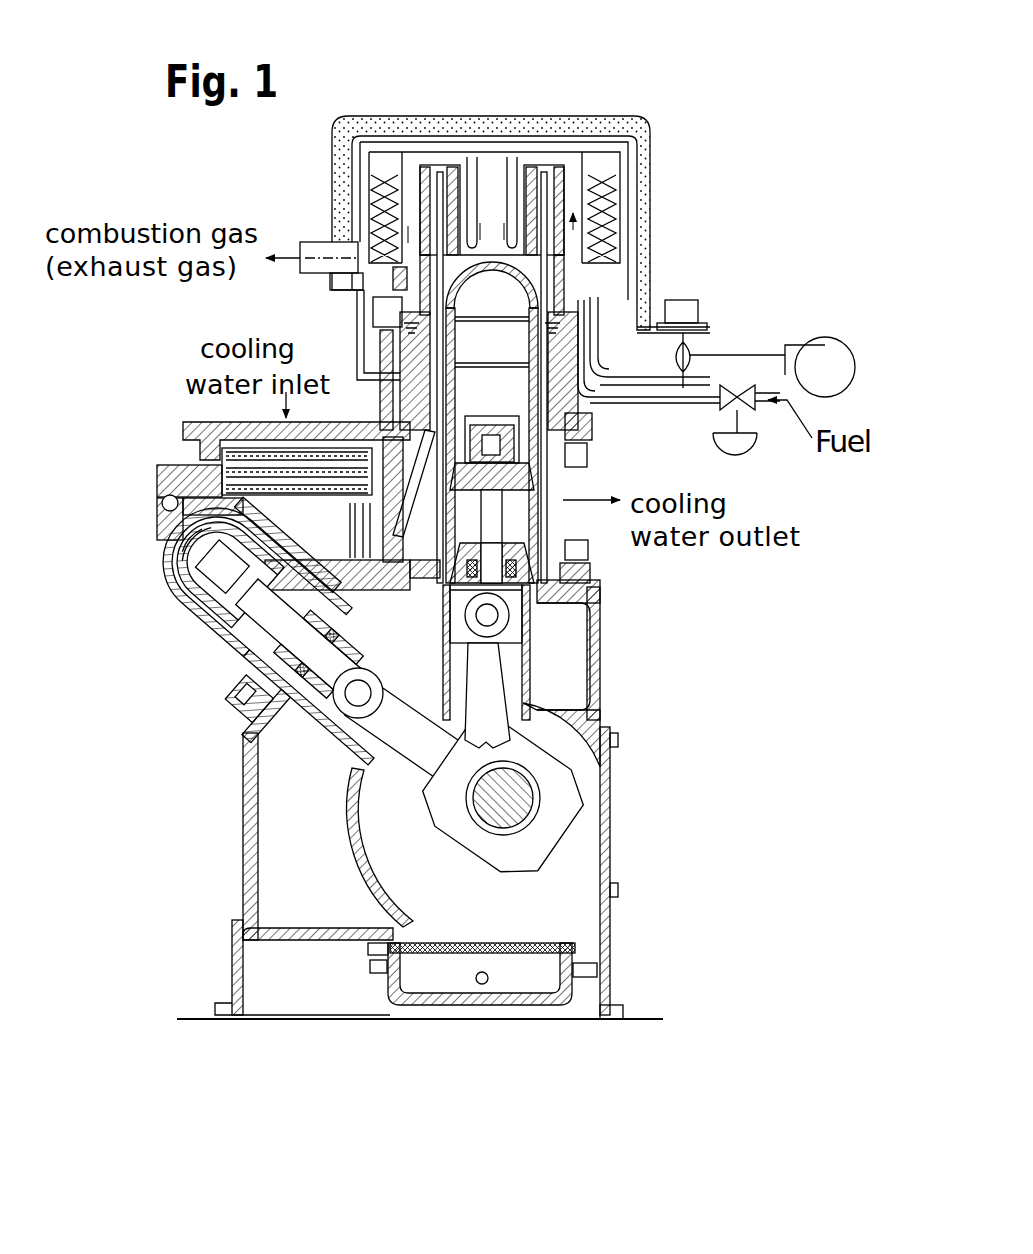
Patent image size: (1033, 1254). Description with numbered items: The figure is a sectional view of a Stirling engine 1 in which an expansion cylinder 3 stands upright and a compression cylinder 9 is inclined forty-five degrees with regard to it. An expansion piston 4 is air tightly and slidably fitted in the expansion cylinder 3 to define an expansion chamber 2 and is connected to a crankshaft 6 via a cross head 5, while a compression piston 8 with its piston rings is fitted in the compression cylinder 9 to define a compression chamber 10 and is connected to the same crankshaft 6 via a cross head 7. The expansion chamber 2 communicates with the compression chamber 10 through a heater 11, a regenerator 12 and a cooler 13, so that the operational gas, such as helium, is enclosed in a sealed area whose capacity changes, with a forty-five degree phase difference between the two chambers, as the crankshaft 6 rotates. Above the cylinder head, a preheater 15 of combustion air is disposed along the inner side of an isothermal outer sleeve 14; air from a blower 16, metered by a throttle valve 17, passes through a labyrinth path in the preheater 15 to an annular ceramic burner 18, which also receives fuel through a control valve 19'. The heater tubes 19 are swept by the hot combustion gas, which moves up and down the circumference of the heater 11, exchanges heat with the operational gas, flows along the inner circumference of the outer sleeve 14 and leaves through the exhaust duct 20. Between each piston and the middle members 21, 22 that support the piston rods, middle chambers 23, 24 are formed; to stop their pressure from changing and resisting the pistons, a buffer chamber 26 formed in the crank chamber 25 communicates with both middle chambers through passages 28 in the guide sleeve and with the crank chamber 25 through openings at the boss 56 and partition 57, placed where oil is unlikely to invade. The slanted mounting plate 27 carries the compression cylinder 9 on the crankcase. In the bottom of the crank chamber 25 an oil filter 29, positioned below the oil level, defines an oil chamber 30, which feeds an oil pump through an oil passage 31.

The Stirling engine 1 is at (626, 104).
The expansion chamber 2 is at (545, 252).
The expansion cylinder 3 is at (564, 405).
The expansion piston 4 is at (536, 432).
The cross head 5 is at (525, 637).
The crankshaft 6 is at (548, 778).
The cross head 7 is at (330, 727).
The compression piston 8 is at (184, 600).
The compression cylinder 9 is at (210, 627).
The compression chamber 10 is at (165, 562).
The heater 11 is at (371, 188).
The regenerator 12 is at (566, 450).
The cooler 13 is at (183, 442).
The isothermal outer sleeve 14 is at (557, 130).
The preheater 15 is at (614, 186).
The blower 16 is at (813, 355).
The throttle valve 17 is at (684, 298).
The annular ceramic burner 18 is at (395, 282).
The heater 19 is at (494, 187).
The control valve 19' is at (693, 401).
The exhaust duct 20 is at (302, 270).
The middle member 21 is at (461, 553).
The middle member 22 is at (245, 677).
The middle chamber 23 is at (530, 521).
The middle chamber 24 is at (255, 636).
The crank chamber 25 is at (582, 842).
The buffer chamber 26 is at (278, 823).
The mounting plate 27 is at (334, 582).
The passage 28 is at (370, 626).
The oil filter 29 is at (513, 940).
The oil chamber 30 is at (538, 977).
The oil passage 31 is at (482, 987).
The bearing boss 56 is at (553, 698).
The partition wall 57 is at (385, 888).